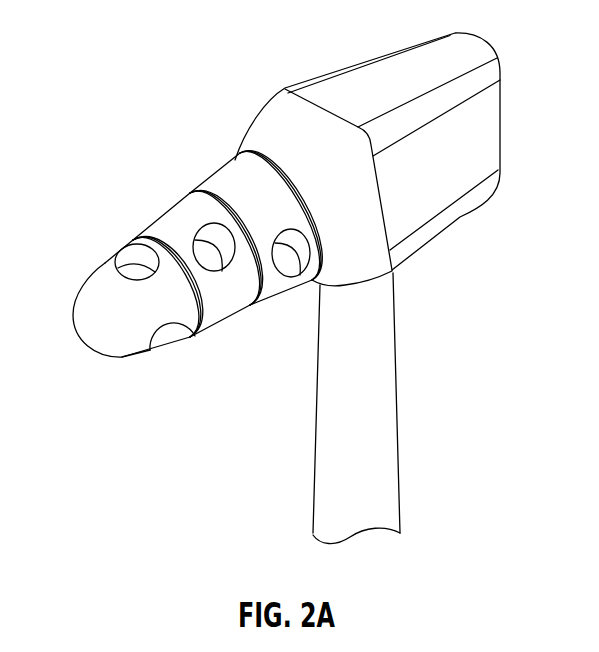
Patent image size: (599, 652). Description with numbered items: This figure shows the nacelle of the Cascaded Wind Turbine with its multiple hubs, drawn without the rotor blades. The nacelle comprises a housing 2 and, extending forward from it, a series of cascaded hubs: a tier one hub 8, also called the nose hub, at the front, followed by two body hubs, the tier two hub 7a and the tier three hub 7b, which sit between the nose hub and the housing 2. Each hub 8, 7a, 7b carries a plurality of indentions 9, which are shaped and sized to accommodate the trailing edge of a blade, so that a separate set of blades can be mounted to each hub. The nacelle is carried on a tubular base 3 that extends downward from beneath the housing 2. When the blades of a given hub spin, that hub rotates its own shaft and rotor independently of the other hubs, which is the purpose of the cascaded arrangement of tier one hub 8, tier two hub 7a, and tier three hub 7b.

The housing 2 is at (490, 136).
The tubular base 3 is at (378, 399).
The tier two hub 7a is at (175, 227).
The tier three hub 7b is at (242, 195).
The tier one hub 8 is at (96, 297).
The indentions 9 is at (135, 260).